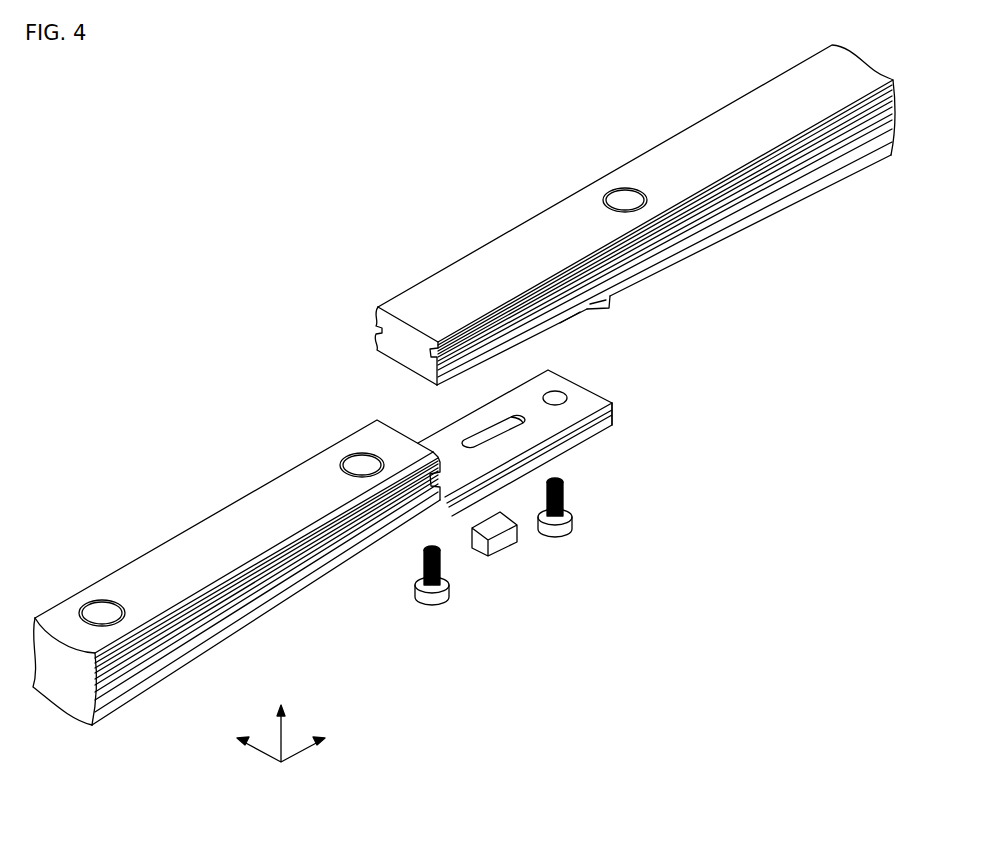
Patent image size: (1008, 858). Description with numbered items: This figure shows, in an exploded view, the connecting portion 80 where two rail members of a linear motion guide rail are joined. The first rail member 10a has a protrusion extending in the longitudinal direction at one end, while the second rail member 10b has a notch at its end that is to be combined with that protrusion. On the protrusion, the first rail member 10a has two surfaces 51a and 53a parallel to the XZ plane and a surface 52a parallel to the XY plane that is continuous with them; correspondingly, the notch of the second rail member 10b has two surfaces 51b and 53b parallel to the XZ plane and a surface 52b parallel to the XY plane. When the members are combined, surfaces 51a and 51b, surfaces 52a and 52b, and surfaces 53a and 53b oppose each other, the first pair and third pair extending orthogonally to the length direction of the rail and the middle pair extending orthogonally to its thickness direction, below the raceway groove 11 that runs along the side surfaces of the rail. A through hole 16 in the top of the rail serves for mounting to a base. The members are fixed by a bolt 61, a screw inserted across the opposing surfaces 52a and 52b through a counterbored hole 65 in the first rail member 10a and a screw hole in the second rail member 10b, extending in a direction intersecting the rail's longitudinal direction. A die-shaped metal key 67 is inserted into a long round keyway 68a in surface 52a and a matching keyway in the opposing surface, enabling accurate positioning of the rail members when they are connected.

The connecting portion 80 is at (303, 262).
The first rail member 10a is at (236, 560).
The second rail member 10b is at (597, 215).
The raceway groove 11 is at (732, 195).
The through hole 16 is at (621, 204).
The surface 51a is at (399, 432).
The surface 51b is at (405, 353).
The surface 52a is at (533, 441).
The surface 52b is at (562, 318).
The surface 53a is at (616, 417).
The surface 53b is at (595, 306).
The bolt 61 is at (555, 532).
The counterbored hole 65 is at (560, 394).
The key 67 is at (502, 545).
The keyway 68a is at (488, 440).